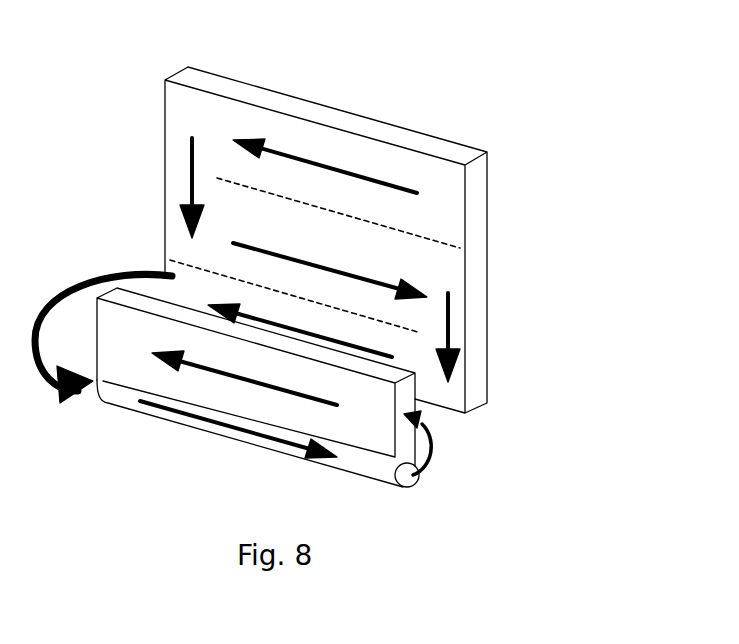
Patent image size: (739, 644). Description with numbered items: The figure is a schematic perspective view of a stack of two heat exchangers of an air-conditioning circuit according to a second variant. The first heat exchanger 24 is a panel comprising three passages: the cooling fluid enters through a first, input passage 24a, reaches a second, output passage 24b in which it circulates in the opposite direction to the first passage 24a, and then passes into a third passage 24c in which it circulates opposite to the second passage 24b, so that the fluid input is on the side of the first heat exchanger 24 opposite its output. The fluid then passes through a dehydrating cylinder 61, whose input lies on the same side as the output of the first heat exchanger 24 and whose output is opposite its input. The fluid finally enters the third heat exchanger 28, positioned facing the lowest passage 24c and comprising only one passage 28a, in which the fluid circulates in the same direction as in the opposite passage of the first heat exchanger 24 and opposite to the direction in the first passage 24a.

The first heat exchanger 24 is at (355, 100).
The first passage 24a is at (397, 168).
The second passage 24b is at (438, 273).
The third passage 24c is at (402, 353).
The third heat exchanger 28 is at (142, 284).
The passage 28a is at (373, 408).
The dehydrating cylinder 61 is at (100, 428).